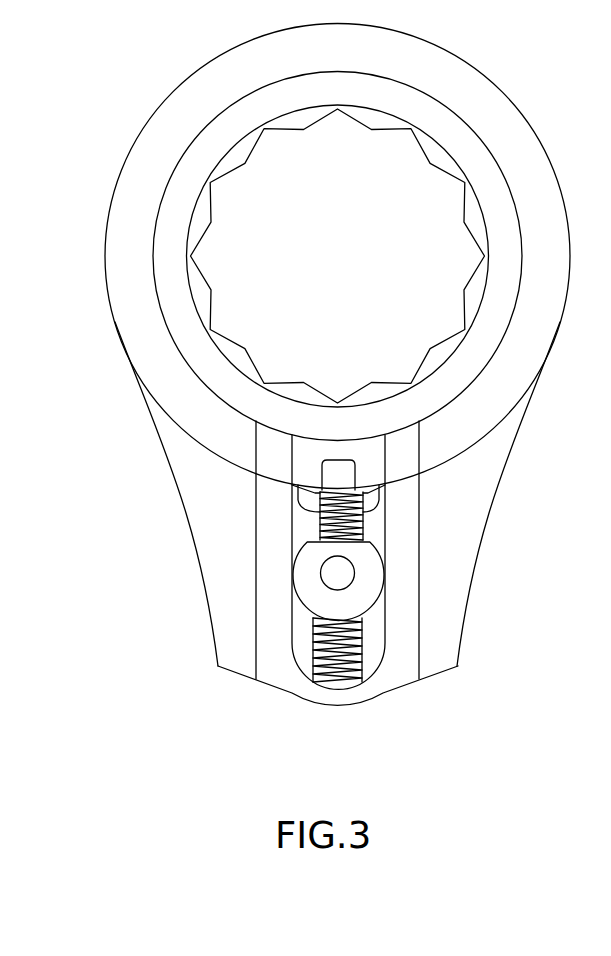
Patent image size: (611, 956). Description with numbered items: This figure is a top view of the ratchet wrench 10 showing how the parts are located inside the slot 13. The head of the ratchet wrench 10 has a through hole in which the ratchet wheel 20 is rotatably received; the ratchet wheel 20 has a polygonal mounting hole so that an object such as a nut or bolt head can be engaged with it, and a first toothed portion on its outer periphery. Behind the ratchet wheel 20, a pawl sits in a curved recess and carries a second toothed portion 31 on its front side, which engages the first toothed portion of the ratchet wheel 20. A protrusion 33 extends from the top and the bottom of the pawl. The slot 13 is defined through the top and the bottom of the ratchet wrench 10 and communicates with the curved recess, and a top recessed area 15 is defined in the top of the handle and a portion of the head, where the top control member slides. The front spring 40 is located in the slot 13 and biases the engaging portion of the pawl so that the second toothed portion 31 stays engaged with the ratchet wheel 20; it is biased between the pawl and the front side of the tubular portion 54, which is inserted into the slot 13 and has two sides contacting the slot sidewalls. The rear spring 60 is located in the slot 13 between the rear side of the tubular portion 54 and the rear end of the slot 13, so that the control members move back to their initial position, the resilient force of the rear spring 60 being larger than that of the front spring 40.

The ratchet wrench 10 is at (167, 113).
The ratchet wheel 20 is at (205, 223).
The second toothed portion 31 is at (372, 458).
The protrusion 33 is at (330, 473).
The front spring 40 is at (363, 522).
The tubular portion 54 is at (307, 575).
The top recessed area 15 is at (270, 628).
The slot 13 is at (292, 658).
The rear spring 60 is at (338, 664).